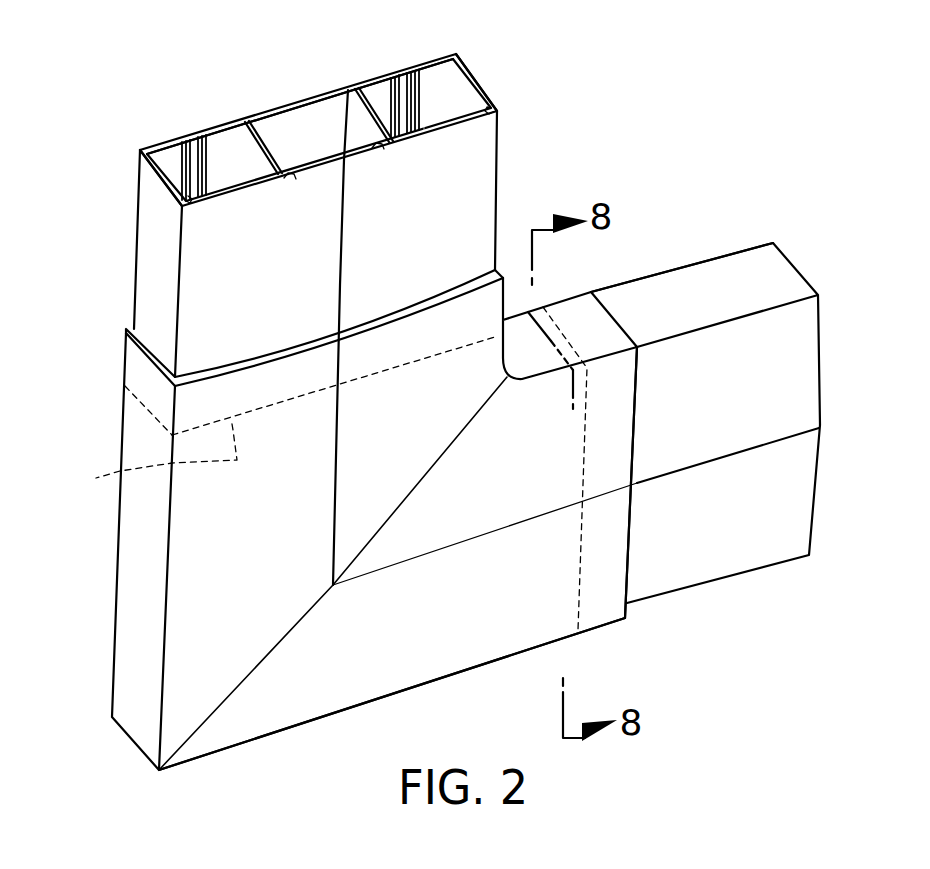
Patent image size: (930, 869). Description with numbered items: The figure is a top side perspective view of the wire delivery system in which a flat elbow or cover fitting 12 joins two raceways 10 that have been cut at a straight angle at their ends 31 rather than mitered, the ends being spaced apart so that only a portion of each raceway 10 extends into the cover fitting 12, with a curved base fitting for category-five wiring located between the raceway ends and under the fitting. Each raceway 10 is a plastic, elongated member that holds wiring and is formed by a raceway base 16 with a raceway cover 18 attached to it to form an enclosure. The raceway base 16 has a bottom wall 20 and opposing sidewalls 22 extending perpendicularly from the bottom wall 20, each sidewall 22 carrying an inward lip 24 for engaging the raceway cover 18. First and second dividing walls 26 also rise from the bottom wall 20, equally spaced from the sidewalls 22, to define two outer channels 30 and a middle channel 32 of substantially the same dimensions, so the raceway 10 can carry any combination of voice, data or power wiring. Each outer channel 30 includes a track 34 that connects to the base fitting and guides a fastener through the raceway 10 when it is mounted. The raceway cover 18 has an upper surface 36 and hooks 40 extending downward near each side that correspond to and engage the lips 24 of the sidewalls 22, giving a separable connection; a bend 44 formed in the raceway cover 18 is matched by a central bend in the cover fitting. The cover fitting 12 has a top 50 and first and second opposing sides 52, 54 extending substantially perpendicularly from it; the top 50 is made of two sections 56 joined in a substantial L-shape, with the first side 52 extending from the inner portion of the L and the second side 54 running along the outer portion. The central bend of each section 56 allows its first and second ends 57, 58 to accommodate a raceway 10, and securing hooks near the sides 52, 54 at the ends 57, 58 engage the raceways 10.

The raceway 10 is at (118, 240).
The cover fitting 12 is at (98, 517).
The raceway base 16 is at (382, 74).
The raceway cover 18 is at (476, 148).
The bottom wall 20 is at (280, 122).
The sidewall 22 is at (148, 184).
The inward lip 24 is at (502, 118).
The dividing wall 26 is at (262, 156).
The outer channel 30 is at (168, 156).
The end 31 is at (580, 586).
The middle channel 32 is at (316, 129).
The track 34 is at (199, 137).
The upper surface 36 is at (468, 193).
The hook 40 is at (205, 210).
The bend 44 is at (343, 267).
The top 50 is at (272, 740).
The first side 52 is at (577, 317).
The second side 54 is at (140, 450).
The section 56 is at (190, 630).
The first end 57 is at (628, 596).
The second end 58 is at (215, 365).